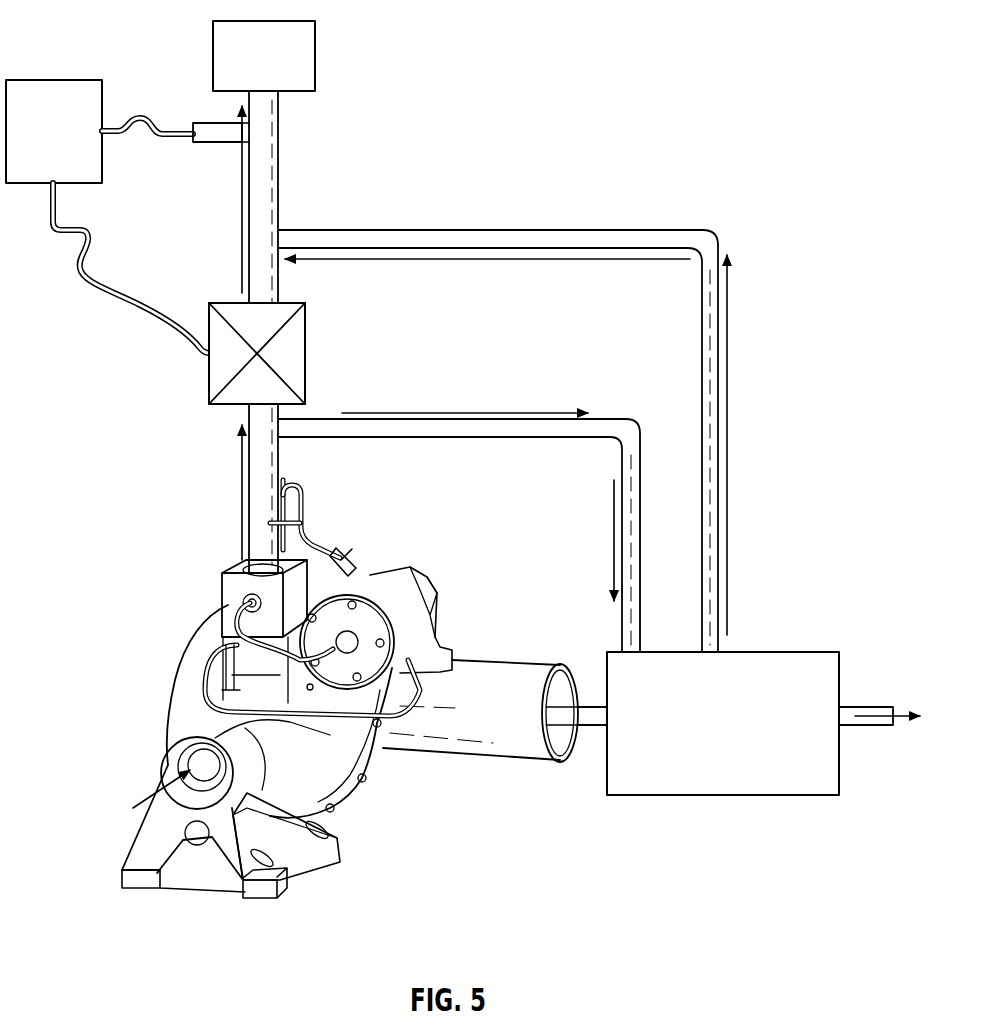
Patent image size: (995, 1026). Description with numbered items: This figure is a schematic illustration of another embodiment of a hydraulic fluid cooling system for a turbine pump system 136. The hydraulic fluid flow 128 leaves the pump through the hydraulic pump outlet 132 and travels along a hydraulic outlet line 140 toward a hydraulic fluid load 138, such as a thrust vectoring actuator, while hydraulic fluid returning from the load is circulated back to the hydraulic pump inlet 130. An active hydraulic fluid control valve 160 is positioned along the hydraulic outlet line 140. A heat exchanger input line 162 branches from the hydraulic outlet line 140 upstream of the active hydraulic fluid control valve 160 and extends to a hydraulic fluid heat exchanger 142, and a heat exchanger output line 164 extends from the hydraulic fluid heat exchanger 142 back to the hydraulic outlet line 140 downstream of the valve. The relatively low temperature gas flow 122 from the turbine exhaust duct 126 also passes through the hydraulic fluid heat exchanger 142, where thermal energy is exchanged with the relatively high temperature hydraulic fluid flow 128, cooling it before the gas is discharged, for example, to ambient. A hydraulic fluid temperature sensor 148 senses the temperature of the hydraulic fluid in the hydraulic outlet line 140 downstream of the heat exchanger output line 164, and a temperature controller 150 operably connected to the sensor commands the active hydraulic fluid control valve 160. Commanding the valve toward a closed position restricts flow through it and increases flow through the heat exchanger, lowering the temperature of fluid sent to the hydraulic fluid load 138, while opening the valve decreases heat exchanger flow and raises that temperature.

The gas flow 122 is at (897, 728).
The turbine exhaust duct 126 is at (519, 765).
The hydraulic fluid flow 128 is at (188, 792).
The hydraulic pump inlet 130 is at (180, 755).
The hydraulic pump outlet 132 is at (243, 565).
The turbine pump system 136 is at (177, 898).
The hydraulic fluid load 138 is at (213, 46).
The hydraulic outlet line 140 is at (249, 503).
The hydraulic fluid heat exchanger 142 is at (771, 672).
The hydraulic fluid temperature sensor 148 is at (219, 110).
The temperature controller 150 is at (50, 80).
The active hydraulic fluid control valve 160 is at (208, 389).
The heat exchanger input line 162 is at (483, 437).
The heat exchanger output line 164 is at (597, 230).